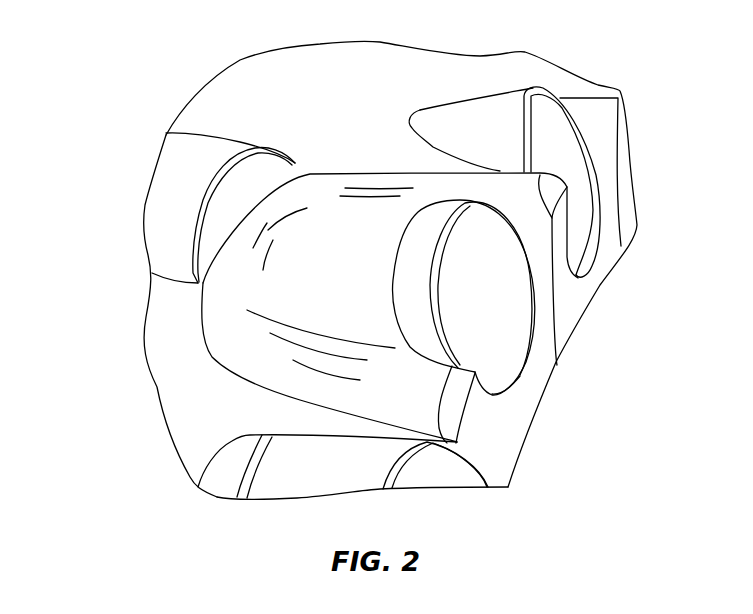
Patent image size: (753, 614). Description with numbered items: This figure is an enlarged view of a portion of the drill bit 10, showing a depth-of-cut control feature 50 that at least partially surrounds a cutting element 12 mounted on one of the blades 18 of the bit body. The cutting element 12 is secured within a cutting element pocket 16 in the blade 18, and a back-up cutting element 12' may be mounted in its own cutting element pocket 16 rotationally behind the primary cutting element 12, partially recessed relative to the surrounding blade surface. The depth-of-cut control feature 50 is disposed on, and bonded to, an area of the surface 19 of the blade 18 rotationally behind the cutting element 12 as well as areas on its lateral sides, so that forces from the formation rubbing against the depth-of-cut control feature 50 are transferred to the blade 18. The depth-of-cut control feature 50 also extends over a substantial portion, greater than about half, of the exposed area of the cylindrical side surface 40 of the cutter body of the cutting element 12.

The drill bit 10 is at (127, 77).
The cutting element 12 is at (512, 297).
The back-up cutting element 12' is at (175, 215).
The cutting element pocket 16 is at (534, 252).
The blade 18 is at (340, 104).
The surface of the blade 19 is at (217, 401).
The cylindrical side surface 40 is at (418, 308).
The depth-of-cut control feature 50 is at (347, 274).